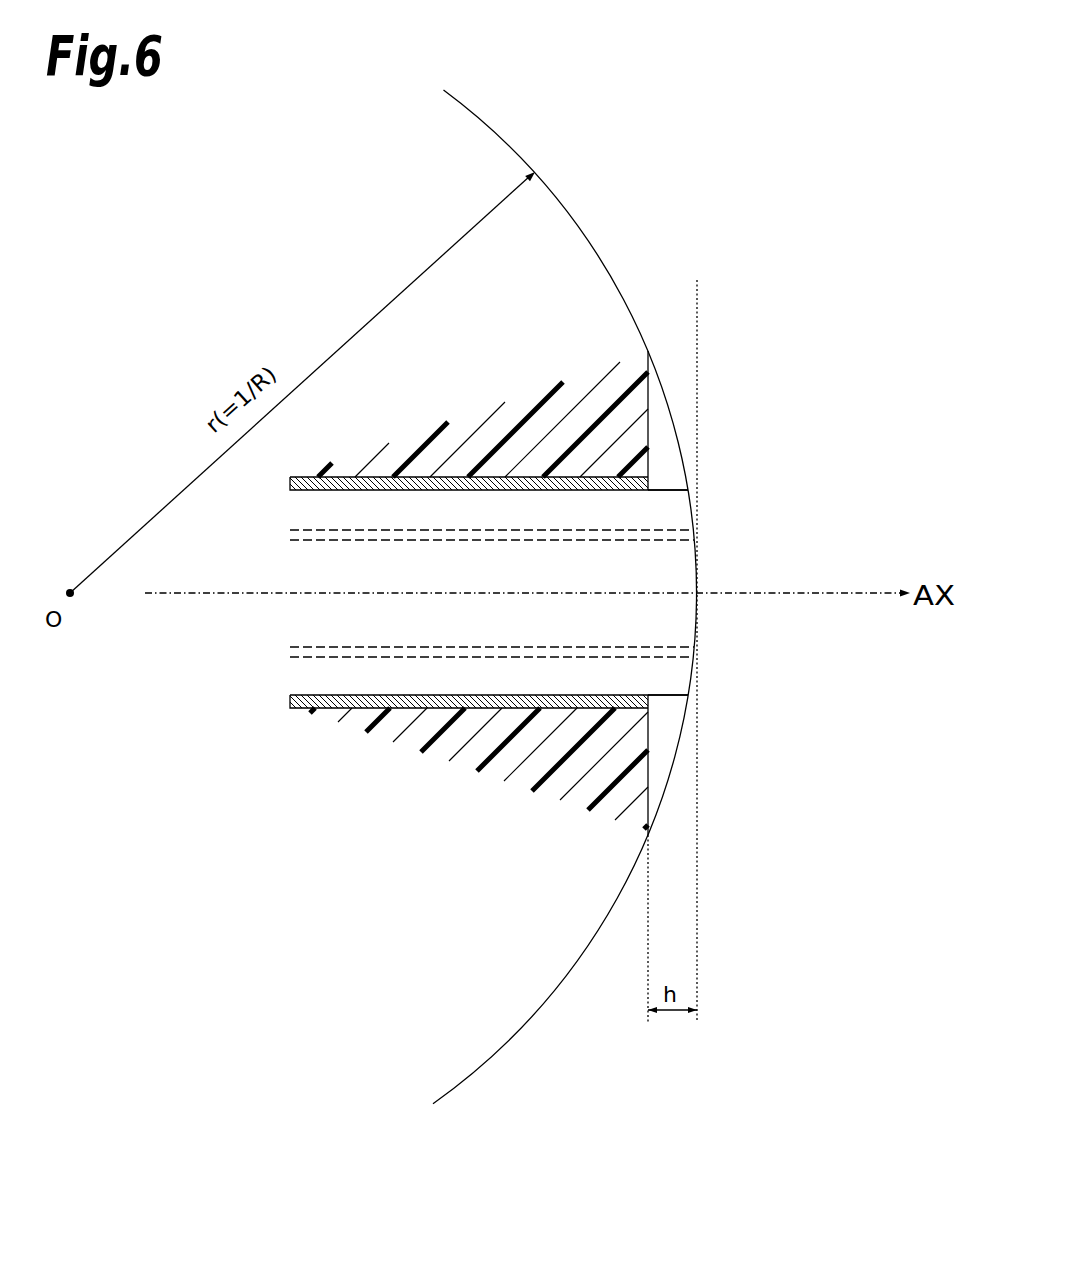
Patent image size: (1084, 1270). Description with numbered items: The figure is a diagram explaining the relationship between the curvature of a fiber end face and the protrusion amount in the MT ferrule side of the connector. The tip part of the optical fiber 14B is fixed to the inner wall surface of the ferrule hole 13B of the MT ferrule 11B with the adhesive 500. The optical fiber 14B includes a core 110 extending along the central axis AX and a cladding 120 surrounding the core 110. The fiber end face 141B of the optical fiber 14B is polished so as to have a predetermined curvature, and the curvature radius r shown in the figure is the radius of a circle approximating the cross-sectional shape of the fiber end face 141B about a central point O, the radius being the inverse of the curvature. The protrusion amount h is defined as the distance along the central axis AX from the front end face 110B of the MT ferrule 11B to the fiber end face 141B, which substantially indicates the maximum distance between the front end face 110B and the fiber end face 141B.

The adhesive 500 is at (460, 477).
The MT ferrule 11B is at (613, 344).
The core 110 is at (315, 538).
The front end face 110B is at (648, 421).
The cladding 120 is at (305, 672).
The ferrule hole 13B is at (663, 476).
The optical fiber 14B is at (276, 615).
The fiber end face 141B is at (697, 632).